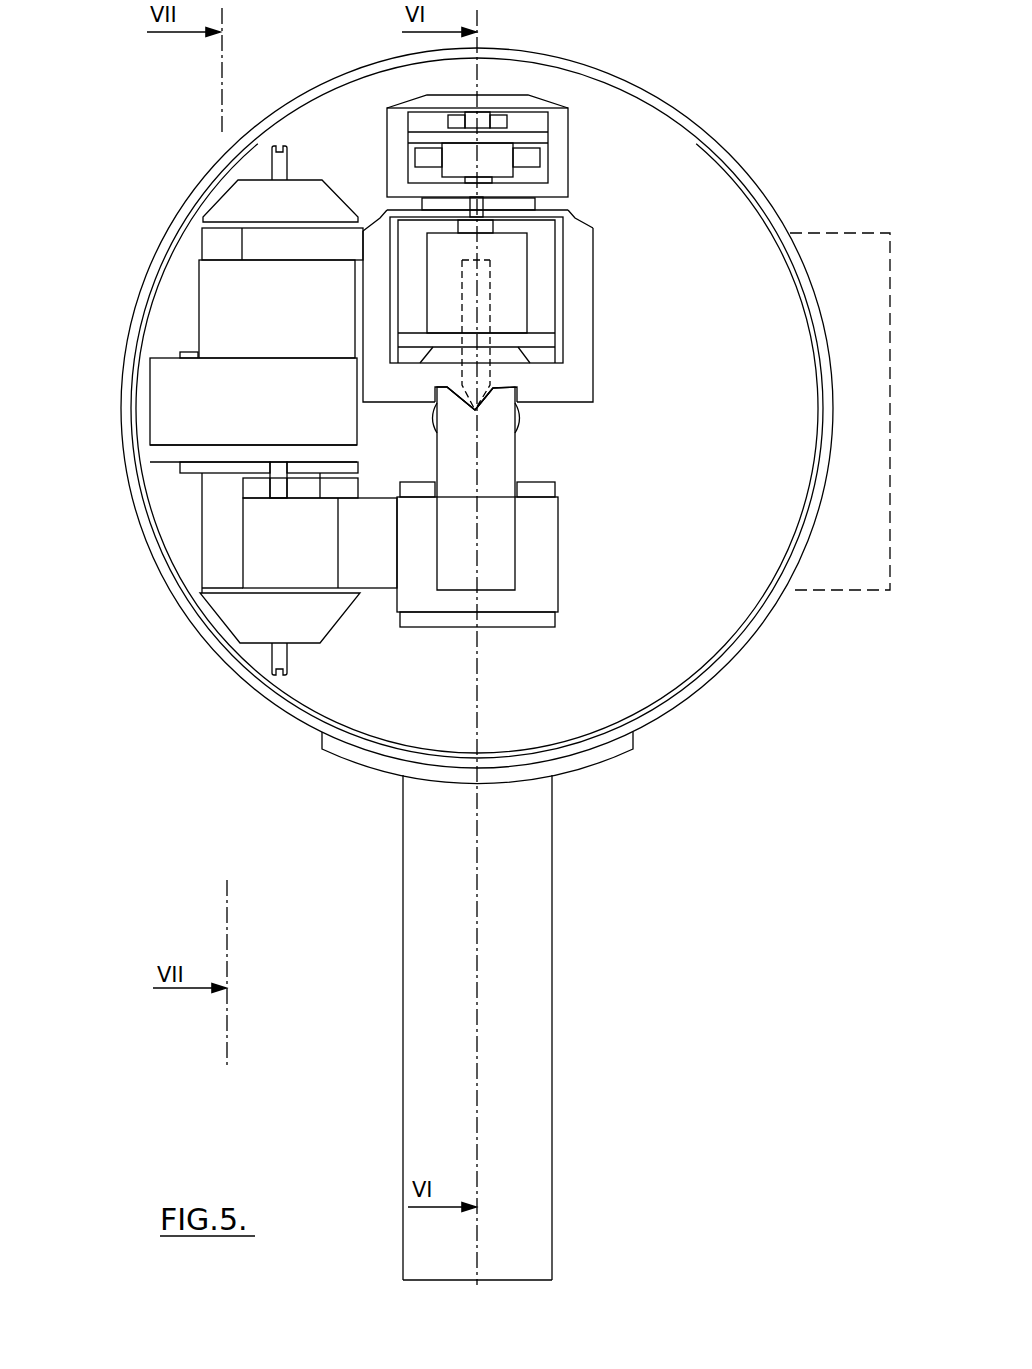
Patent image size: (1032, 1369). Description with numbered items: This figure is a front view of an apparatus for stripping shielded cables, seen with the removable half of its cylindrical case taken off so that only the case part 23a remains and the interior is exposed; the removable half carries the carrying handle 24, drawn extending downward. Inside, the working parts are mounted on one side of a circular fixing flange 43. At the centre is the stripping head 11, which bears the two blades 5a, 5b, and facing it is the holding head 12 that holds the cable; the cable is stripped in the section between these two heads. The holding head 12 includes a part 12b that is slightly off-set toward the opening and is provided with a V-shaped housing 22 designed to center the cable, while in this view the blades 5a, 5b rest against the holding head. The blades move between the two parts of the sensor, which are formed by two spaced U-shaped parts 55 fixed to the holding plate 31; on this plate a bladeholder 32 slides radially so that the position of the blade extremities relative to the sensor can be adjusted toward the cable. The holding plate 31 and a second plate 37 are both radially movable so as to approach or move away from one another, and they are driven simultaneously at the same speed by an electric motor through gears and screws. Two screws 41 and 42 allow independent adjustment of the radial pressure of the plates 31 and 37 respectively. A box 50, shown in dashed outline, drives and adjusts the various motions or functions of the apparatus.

The stripping head 11 is at (610, 342).
The holding head 12 is at (534, 470).
The part of holding head 12b is at (508, 433).
The V-shaped housing 22 is at (493, 390).
The case part 23a is at (130, 508).
The carrying handle 24 is at (394, 1020).
The holding plate 31 is at (317, 250).
The bladeholder 32 is at (542, 282).
The plate 37 is at (368, 542).
The screw 41 is at (275, 163).
The screw 42 is at (270, 655).
The circular fixing flange 43 is at (632, 155).
The box 50 is at (836, 605).
The U-shaped parts 55 is at (583, 315).
The blade 5a is at (493, 378).
The blade 5b is at (748, 378).